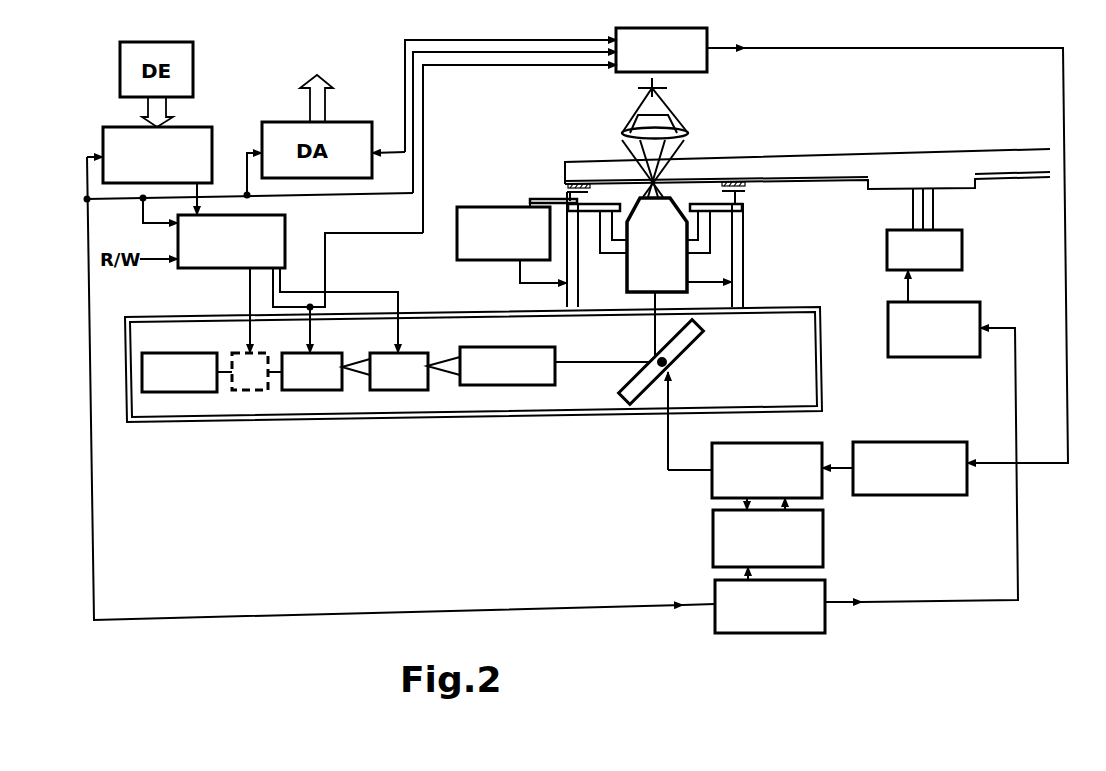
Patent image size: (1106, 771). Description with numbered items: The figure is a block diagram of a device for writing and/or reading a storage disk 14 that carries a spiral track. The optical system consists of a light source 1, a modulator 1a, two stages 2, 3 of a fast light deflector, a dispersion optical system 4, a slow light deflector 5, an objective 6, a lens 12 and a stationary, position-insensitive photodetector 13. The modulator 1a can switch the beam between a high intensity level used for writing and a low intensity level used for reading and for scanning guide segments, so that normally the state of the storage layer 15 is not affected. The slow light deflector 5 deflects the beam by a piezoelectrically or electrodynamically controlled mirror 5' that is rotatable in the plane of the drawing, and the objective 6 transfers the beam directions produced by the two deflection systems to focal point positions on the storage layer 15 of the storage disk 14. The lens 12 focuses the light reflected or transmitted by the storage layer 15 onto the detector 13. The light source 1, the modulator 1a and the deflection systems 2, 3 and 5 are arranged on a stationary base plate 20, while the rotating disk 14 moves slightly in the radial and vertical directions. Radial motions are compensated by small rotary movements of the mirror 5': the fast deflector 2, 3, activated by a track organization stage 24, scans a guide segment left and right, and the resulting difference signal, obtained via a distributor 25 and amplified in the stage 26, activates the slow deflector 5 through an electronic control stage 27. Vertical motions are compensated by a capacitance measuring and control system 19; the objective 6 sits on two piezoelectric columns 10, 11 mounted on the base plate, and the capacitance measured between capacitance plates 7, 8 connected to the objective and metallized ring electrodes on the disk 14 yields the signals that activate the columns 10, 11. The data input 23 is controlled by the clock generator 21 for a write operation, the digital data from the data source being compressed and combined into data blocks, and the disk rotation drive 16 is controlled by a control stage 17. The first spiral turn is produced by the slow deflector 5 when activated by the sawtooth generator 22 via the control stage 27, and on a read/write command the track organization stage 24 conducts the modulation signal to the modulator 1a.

The light source 1 is at (179, 372).
The modulator 1a is at (250, 371).
The first stage of fast light deflector 2 is at (312, 371).
The second stage of fast light deflector 3 is at (399, 371).
The dispersion optical system 4 is at (507, 366).
The slow light deflector 5 is at (668, 362).
The mirror 5' is at (668, 328).
The objective 6 is at (657, 245).
The capacitance plate 7 is at (740, 189).
The capacitance plate 8 is at (565, 192).
The piezoelectric column 10 is at (578, 288).
The piezoelectric column 11 is at (745, 279).
The lens 12 is at (690, 133).
The photodetector 13 is at (667, 107).
The storage disk 14 is at (778, 168).
The storage layer 15 is at (710, 177).
The disk rotation drive 16 is at (952, 250).
The control stage 17 is at (970, 310).
The capacitance measuring and control system 19 is at (493, 216).
The stationary base plate 20 is at (473, 364).
The clock generator 21 is at (720, 627).
The sawtooth generator 22 is at (717, 550).
The data input 23 is at (199, 143).
The track organization stage 24 is at (231, 258).
The distributor 25 is at (695, 25).
The amplification stage 26 is at (950, 480).
The electronic control stage 27 is at (717, 488).